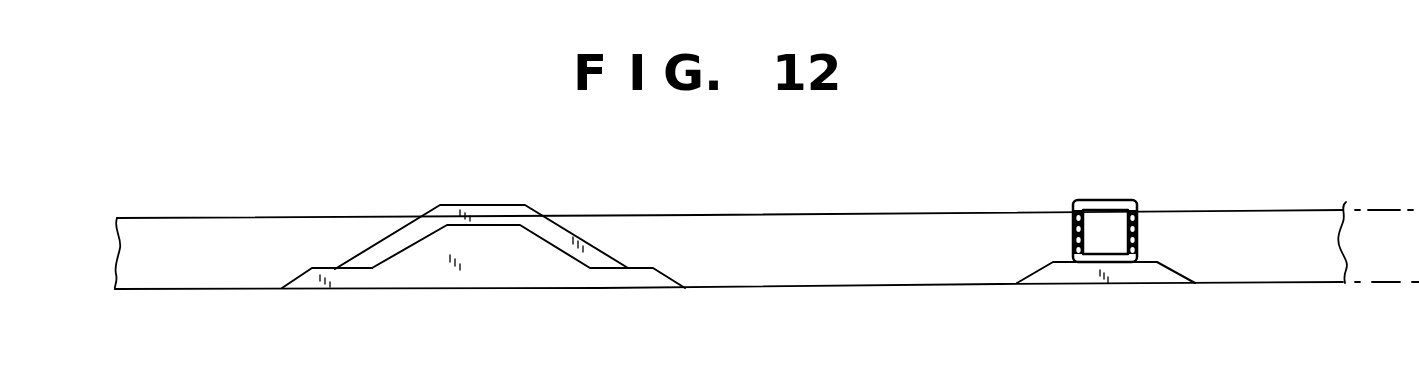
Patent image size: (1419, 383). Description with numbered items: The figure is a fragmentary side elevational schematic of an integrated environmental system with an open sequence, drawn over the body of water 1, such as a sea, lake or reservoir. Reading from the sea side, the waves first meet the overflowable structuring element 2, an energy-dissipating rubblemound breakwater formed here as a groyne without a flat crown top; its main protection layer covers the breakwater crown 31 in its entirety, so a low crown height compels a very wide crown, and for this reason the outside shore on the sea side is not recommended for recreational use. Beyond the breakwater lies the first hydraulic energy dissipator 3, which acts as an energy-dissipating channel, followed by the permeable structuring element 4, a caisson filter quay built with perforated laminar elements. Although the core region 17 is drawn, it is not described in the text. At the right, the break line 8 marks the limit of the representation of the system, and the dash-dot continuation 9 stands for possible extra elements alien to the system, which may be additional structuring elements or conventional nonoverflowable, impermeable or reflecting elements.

The body of water 1 is at (240, 215).
The overflowable structuring element 2 is at (493, 205).
The first hydraulic energy dissipator 3 is at (762, 213).
The permeable structuring element 4 is at (1098, 200).
The limit of the representation of the integrated environmental system 8 is at (1338, 193).
The possible extra elements 9 is at (1410, 237).
The core material 17 is at (498, 260).
The breakwater crown 31 is at (385, 249).